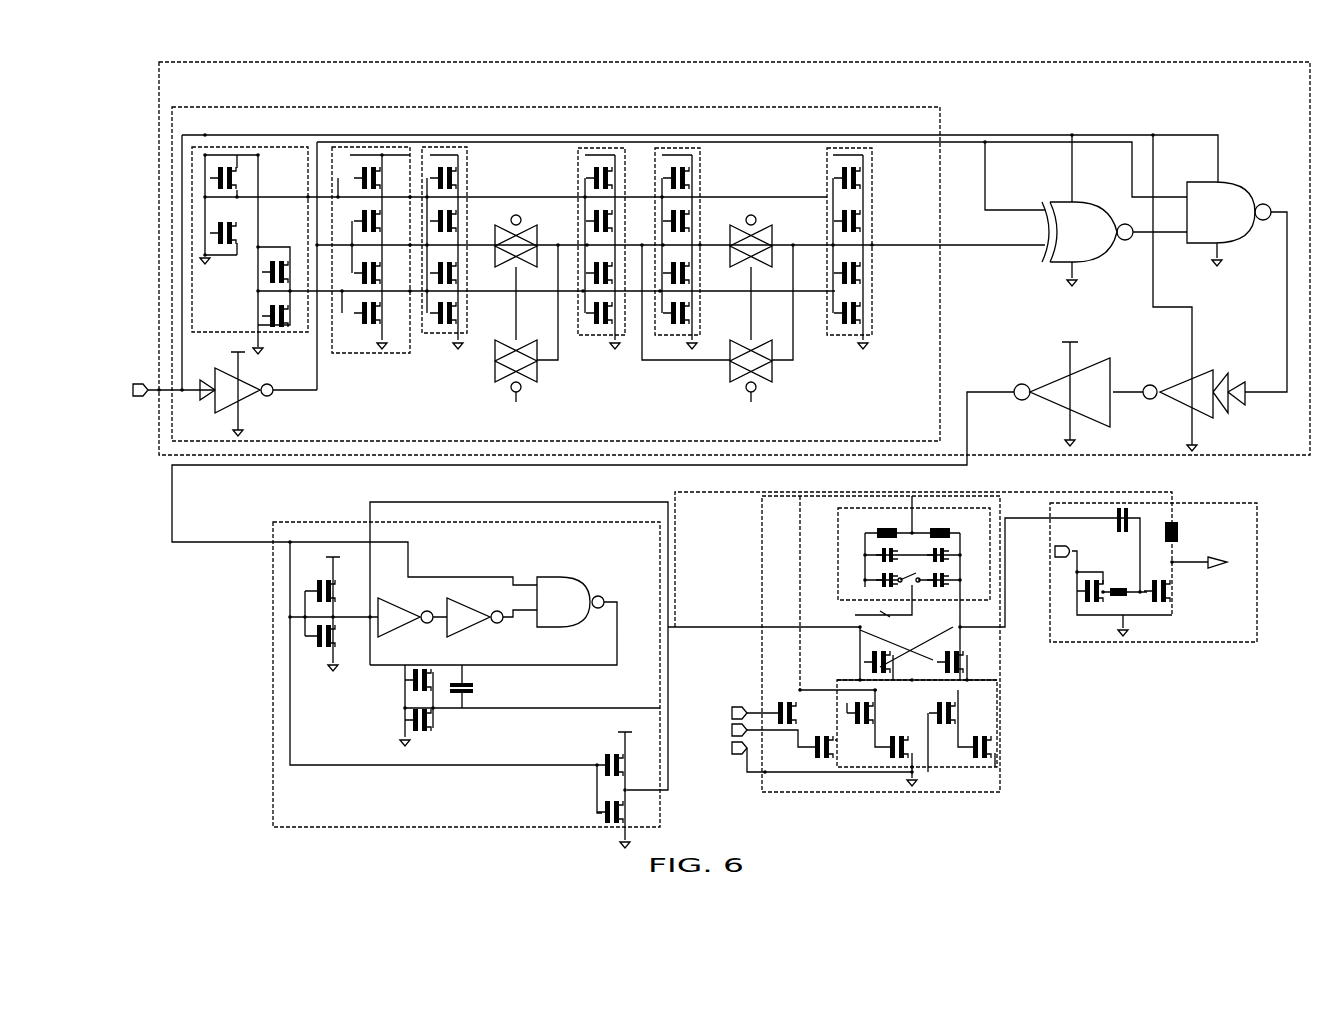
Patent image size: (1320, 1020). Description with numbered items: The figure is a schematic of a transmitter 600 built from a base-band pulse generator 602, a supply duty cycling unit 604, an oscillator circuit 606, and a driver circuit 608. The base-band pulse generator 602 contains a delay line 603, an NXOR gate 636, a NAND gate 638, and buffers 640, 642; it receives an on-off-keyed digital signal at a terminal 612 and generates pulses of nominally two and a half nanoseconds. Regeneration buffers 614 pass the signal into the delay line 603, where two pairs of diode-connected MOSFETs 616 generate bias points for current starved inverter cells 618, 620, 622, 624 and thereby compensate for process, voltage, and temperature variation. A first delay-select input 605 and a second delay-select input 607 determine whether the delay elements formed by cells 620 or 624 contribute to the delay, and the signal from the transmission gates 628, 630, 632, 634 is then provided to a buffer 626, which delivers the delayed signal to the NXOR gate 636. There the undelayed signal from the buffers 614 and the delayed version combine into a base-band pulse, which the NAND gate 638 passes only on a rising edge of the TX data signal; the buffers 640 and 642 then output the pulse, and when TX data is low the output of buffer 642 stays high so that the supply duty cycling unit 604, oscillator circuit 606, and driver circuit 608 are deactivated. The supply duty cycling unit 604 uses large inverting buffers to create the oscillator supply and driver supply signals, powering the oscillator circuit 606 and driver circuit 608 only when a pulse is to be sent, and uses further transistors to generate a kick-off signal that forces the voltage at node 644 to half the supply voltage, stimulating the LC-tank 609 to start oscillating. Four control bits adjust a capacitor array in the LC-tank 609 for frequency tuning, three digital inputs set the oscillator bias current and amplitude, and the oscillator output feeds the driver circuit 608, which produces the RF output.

The transmitter 600 is at (698, 457).
The base-band pulse generator 602 is at (159, 125).
The delay line 603 is at (916, 391).
The supply duty cycling unit 604 is at (350, 827).
The input D[0] 605 is at (533, 413).
The oscillator circuit 606 is at (920, 643).
The input D[1] 607 is at (768, 413).
The driver circuit 608 is at (1177, 643).
The LC-tank 609 is at (977, 600).
The terminal 612 is at (140, 382).
The regeneration buffers 614 is at (253, 387).
The diode-connected MOSFETs M1-4 616 is at (214, 147).
The current starved inverter cell 618 is at (338, 147).
The current starved inverter cell 620 is at (468, 190).
The current starved inverter cell 622 is at (588, 148).
The current starved inverter cell 624 is at (672, 148).
The buffer 626 is at (845, 148).
The transmission gate T2 628 is at (500, 372).
The transmission gate T1 630 is at (525, 230).
The transmission gate T4 632 is at (735, 372).
The transmission gate T3 634 is at (760, 230).
The NXOR gate 636 is at (1073, 200).
The NAND gate 638 is at (1235, 182).
The buffer 640 is at (1220, 375).
The buffer 642 is at (1095, 360).
The node 644 is at (827, 632).